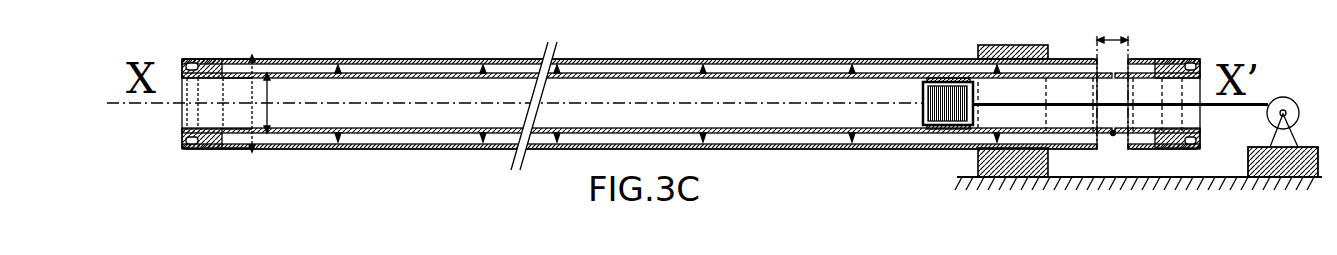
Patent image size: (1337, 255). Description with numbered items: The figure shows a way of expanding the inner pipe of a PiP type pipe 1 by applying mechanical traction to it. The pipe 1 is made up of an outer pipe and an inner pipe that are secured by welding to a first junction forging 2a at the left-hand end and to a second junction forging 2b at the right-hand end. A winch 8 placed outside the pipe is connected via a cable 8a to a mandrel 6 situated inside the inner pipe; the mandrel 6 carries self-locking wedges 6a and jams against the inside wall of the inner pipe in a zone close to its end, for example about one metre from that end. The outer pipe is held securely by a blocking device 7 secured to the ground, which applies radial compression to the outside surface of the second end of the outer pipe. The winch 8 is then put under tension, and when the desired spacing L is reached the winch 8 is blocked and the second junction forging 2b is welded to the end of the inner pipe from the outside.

The PiP type pipe 1 is at (787, 44).
The first junction forging 2a is at (210, 157).
The second junction forging 2b is at (1168, 154).
The mandrel 6 is at (921, 97).
The self-locking wedges 6a is at (952, 77).
The blocking device 7 is at (1010, 45).
The winch 8 is at (1318, 155).
The cable 8a is at (1258, 102).